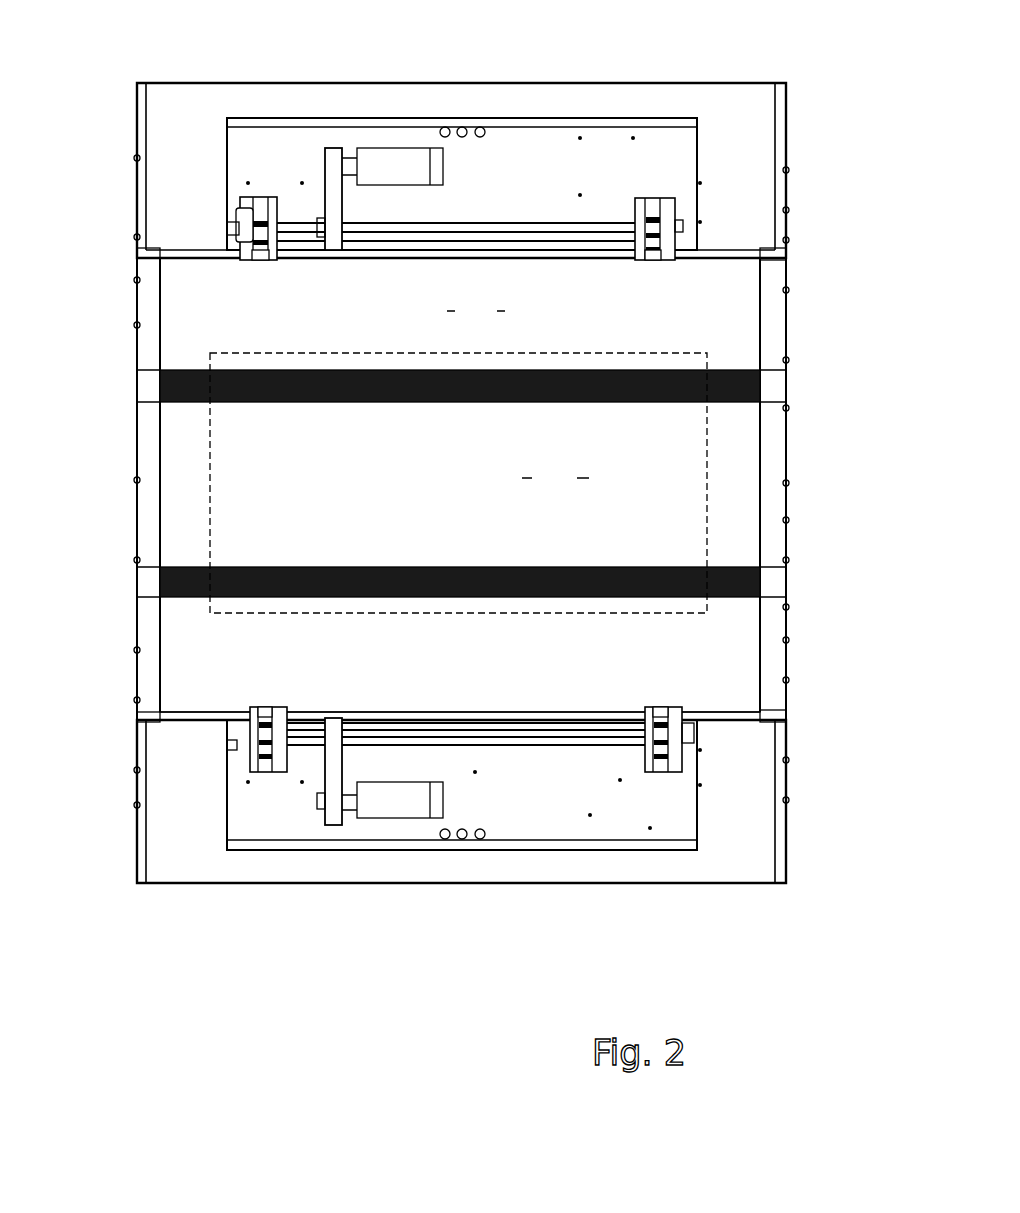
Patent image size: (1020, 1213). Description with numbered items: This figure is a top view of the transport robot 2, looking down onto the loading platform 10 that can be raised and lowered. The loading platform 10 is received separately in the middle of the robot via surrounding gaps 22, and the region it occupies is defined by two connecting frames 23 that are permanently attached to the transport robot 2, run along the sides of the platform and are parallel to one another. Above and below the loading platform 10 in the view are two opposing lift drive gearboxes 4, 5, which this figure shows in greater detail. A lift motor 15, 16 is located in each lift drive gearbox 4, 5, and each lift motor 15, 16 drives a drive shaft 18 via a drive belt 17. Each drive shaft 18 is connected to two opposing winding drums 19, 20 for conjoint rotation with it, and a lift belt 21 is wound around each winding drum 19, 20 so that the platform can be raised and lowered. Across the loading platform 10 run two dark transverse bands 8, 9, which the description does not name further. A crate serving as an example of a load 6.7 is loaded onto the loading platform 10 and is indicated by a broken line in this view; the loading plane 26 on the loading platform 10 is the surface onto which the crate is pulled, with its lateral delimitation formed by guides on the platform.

The transport robot 2 is at (738, 102).
The lift drive gearbox 4 is at (553, 142).
The lift drive gearbox 5 is at (528, 820).
The load / crate 6.7 is at (573, 360).
The first conveyor band 8 is at (377, 402).
The second conveyor band 9 is at (410, 567).
The loading platform 10 is at (518, 394).
The lift motor 15 is at (393, 168).
The lift motor 16 is at (395, 806).
The drive belt 17 is at (333, 172).
The drive shaft 18 is at (497, 230).
The winding drum 19 is at (264, 215).
The winding drum 20 is at (663, 200).
The lift belt 21 is at (270, 255).
The gap 22 is at (723, 251).
The connecting frame 23 is at (142, 343).
The loading plane 26 is at (742, 485).